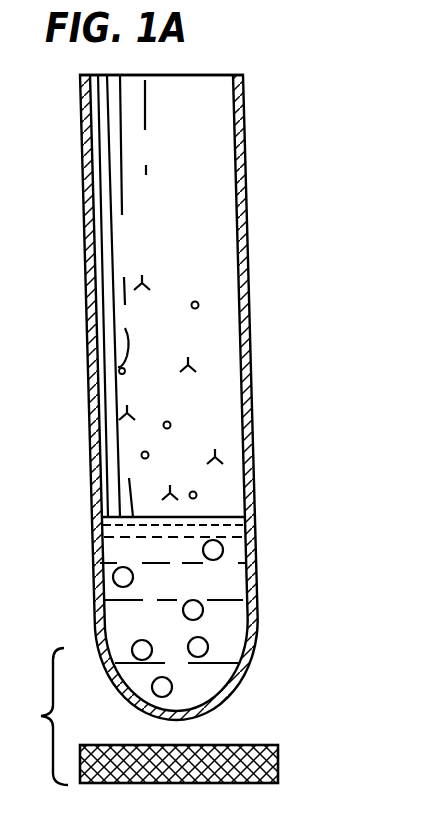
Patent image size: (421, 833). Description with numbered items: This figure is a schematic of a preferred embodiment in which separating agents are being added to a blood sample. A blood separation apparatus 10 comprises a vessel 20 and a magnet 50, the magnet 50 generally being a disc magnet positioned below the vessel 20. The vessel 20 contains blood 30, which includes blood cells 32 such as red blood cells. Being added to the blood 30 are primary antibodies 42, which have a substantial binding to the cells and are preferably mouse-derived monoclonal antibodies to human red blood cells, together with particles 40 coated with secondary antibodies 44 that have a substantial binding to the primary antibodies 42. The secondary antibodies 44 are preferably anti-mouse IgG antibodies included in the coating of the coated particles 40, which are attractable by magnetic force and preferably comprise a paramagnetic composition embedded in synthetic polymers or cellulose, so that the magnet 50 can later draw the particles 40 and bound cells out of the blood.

The blood separation apparatus 10 is at (288, 147).
The vessel 20 is at (248, 295).
The blood 30 is at (230, 613).
The blood cells 32 is at (115, 565).
The particles 40 is at (115, 362).
The primary antibodies 42 is at (218, 456).
The secondary antibodies 44 is at (125, 328).
The magnet 50 is at (280, 762).